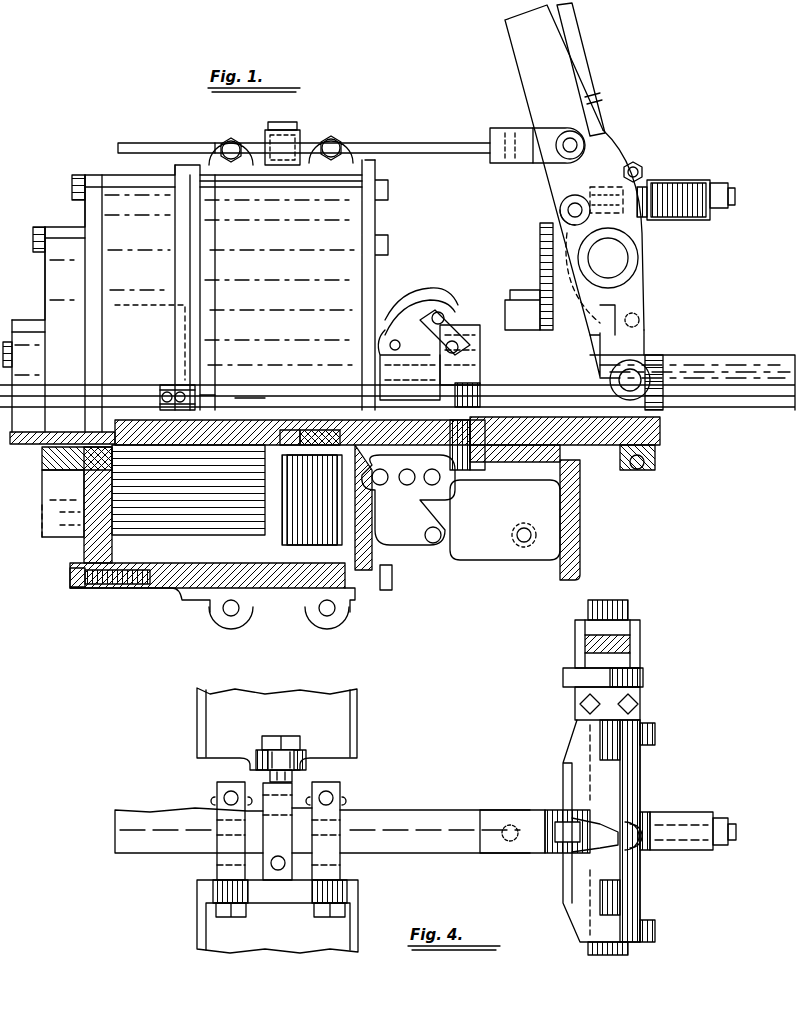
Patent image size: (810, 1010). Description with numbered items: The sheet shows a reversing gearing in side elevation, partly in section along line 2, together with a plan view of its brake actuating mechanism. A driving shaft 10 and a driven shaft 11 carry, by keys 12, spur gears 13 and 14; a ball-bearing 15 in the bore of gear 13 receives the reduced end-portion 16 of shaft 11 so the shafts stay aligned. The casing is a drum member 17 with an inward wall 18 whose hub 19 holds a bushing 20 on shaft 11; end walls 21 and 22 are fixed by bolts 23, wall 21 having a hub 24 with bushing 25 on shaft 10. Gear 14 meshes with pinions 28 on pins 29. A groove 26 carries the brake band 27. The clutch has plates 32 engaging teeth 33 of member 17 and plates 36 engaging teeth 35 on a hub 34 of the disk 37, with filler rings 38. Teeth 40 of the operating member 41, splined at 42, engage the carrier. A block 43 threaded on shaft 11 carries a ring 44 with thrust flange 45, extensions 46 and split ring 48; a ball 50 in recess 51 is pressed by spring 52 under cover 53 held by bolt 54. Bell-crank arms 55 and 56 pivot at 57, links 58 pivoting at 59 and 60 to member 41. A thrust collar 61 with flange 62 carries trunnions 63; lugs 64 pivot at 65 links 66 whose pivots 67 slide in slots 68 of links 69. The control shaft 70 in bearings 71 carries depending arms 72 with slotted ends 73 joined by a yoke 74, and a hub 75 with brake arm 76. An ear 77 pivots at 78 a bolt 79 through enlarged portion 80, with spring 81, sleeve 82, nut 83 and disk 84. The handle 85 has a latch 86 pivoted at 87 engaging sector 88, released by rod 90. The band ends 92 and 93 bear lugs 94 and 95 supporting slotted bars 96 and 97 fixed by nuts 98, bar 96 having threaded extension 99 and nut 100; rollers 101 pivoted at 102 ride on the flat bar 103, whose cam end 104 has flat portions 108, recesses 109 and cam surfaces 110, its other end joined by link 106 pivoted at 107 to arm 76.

In FIG. 1, the section line 2 is at (198, 139).
In FIG. 1, the driving shaft 10 is at (45, 440).
In FIG. 1, the driven shaft 11 is at (735, 370).
In FIG. 1, the keys 12 is at (115, 420).
In FIG. 1, the spur gear 13 is at (110, 425).
In FIG. 1, the spur gear 14 is at (248, 398).
In FIG. 1, the ball-bearing 15 is at (205, 400).
In FIG. 1, the reduced end-portion 16 is at (172, 383).
In FIG. 1, the cylindrical or drum member 17 is at (165, 585).
In FIG. 1, the radial inwardly extended wall 18 is at (280, 535).
In FIG. 1, the concentric hub 19 is at (292, 430).
In FIG. 1, the bushing 20 is at (305, 430).
In FIG. 1, the end wall 21 is at (100, 530).
In FIG. 1, the end wall 22 is at (372, 548).
In FIG. 1, the bolts 23 is at (74, 590).
In FIG. 1, the concentric hub 24 is at (70, 465).
In FIG. 1, the bushing 25 is at (45, 480).
In FIG. 1, the outer circumferential groove 26 is at (320, 612).
In FIG. 1, the brake band 27 is at (365, 195).
In FIG. 1, the pinions 28 is at (195, 520).
In FIG. 1, the pins 29 is at (48, 515).
In FIG. 1, the clutch-plates 32 is at (302, 600).
In FIG. 1, the teeth 33 is at (372, 600).
In FIG. 1, the hub 34 is at (320, 440).
In FIG. 1, the teeth 35 is at (335, 440).
In FIG. 1, the clutch-plates 36 is at (345, 440).
In FIG. 1, the annular disk or flange 37 is at (420, 545).
In FIG. 1, the filler rings 38 is at (240, 535).
In FIG. 1, the teeth 40 is at (362, 320).
In FIG. 1, the clutch plate operating member 41 is at (385, 445).
In FIG. 1, the spline 42 is at (447, 318).
In FIG. 1, the block or nut 43 is at (472, 445).
In FIG. 1, the ring 44 is at (480, 350).
In FIG. 1, the thrust flange 45 is at (445, 440).
In FIG. 1, the extensions or teeth 46 is at (482, 390).
In FIG. 1, the split resilient ring 48 is at (478, 455).
In FIG. 1, the ball 50 is at (484, 468).
In FIG. 1, the recess 51 is at (484, 475).
In FIG. 1, the spring 52 is at (470, 465).
In FIG. 1, the cover 53 is at (480, 470).
In FIG. 1, the bolt 54 is at (488, 470).
In FIG. 1, the arms 55 is at (440, 490).
In FIG. 1, the arms 56 is at (440, 540).
In FIG. 1, the pivot 57 is at (438, 292).
In FIG. 1, the links 58 is at (400, 490).
In FIG. 1, the pivot 59 is at (408, 500).
In FIG. 1, the pivot 60 is at (385, 320).
In FIG. 1, the thrust collar 61 is at (590, 447).
In FIG. 1, the radial flange 62 is at (572, 495).
In FIG. 1, the pins or trunnions 63 is at (637, 372).
In FIG. 1, the lugs 64 is at (527, 290).
In FIG. 1, the pivot 65 is at (527, 545).
In FIG. 1, the links 66 is at (505, 550).
In FIG. 1, the pivots 67 is at (430, 500).
In FIG. 1, the slots 68 is at (445, 518).
In FIG. 1, the links 69 is at (418, 510).
In FIG. 1, the operating shaft 70 is at (620, 258).
In FIG. 4, the bearings 71 is at (642, 700).
In FIG. 1, the depending arms 72 is at (640, 298).
In FIG. 1, the slotted ends 73 is at (645, 390).
In FIG. 1, the yoke 74 is at (600, 260).
In FIG. 4, the hub 75 is at (612, 825).
In FIG. 1, the brake operating arm 76 is at (595, 160).
In FIG. 1, the ear 77 is at (560, 218).
In FIG. 1, the pivot 78 is at (563, 202).
In FIG. 1, the bolt 79 is at (733, 192).
In FIG. 1, the enlarged portion 80 is at (598, 200).
In FIG. 1, the coil spring 81 is at (700, 215).
In FIG. 1, the tubular sleeve 82 is at (690, 180).
In FIG. 1, the adjusting nut 83 is at (728, 200).
In FIG. 1, the spherically formed disk member 84 is at (640, 212).
In FIG. 1, the operating handle 85 is at (532, 88).
In FIG. 1, the spring-pressed toothed latch 86 is at (645, 168).
In FIG. 1, the pivot 87 is at (643, 172).
In FIG. 4, the sector 88 is at (575, 681).
In FIG. 1, the rod 90 is at (585, 70).
In FIG. 4, the end of brake band 92 is at (205, 738).
In FIG. 4, the end of brake band 93 is at (205, 934).
In FIG. 1, the lug 94 is at (295, 125).
In FIG. 4, the lug 94 is at (296, 752).
In FIG. 1, the lugs 95 is at (240, 138).
In FIG. 1, the slotted bar 96 is at (282, 130).
In FIG. 1, the slotted bars 97 is at (355, 140).
In FIG. 1, the nuts 98 is at (335, 130).
In FIG. 4, the threaded extension 99 is at (270, 777).
In FIG. 4, the nut 100 is at (284, 734).
In FIG. 4, the rollers 101 is at (217, 795).
In FIG. 4, the pivot 102 is at (222, 799).
In FIG. 1, the long flat bar 103 is at (443, 140).
In FIG. 1, the end-portion 104 is at (137, 140).
In FIG. 1, the link 106 is at (512, 166).
In FIG. 1, the pivot 107 is at (578, 140).
In FIG. 4, the flat parallel portions 108 is at (255, 852).
In FIG. 4, the recessed portions 109 is at (240, 848).
In FIG. 4, the cam surfaces 110 is at (215, 852).